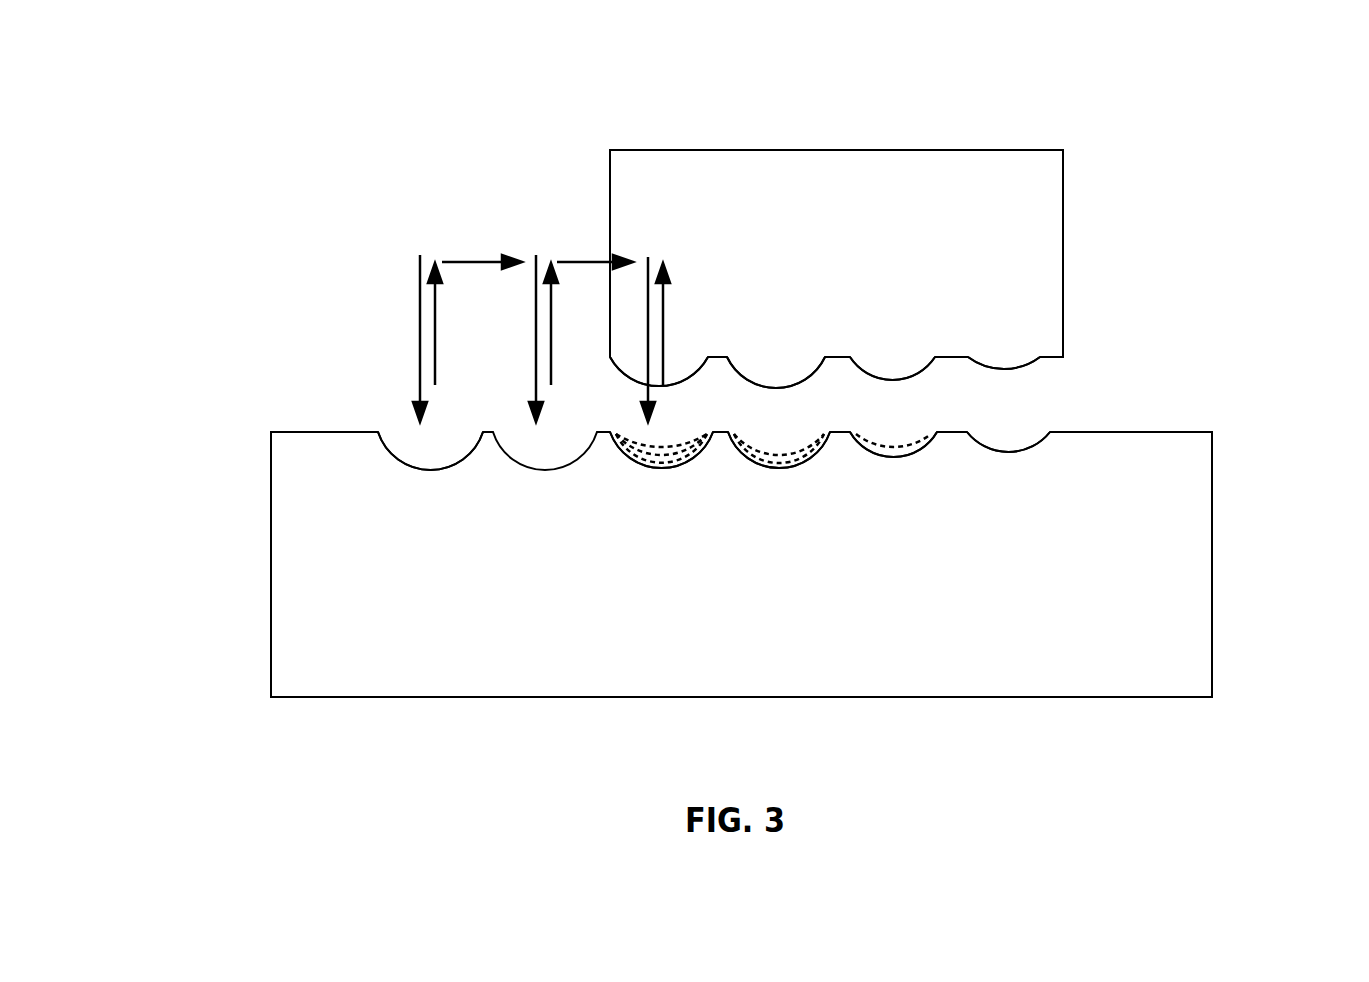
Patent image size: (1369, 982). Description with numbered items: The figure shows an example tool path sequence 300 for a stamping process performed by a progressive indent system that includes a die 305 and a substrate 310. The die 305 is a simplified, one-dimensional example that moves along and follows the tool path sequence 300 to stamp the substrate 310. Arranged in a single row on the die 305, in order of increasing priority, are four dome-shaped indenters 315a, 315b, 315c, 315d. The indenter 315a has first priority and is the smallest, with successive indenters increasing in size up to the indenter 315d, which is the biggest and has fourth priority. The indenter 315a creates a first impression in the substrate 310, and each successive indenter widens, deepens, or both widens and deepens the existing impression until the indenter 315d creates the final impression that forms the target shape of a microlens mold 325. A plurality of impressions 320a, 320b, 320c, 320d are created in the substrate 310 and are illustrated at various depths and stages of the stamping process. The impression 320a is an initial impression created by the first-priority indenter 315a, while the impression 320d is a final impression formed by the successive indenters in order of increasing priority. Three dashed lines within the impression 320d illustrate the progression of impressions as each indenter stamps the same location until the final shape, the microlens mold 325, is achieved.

The tool path sequence 300 is at (263, 77).
The die 305 is at (640, 145).
The substrate 310 is at (262, 525).
The indenter 315a is at (1026, 350).
The indenter 315b is at (918, 357).
The indenter 315c is at (804, 360).
The indenter 315d is at (686, 362).
The impression 320a is at (1020, 463).
The impression 320b is at (902, 475).
The impression 320c is at (789, 482).
The impression 320d is at (667, 483).
The microlens mold 325 is at (428, 482).